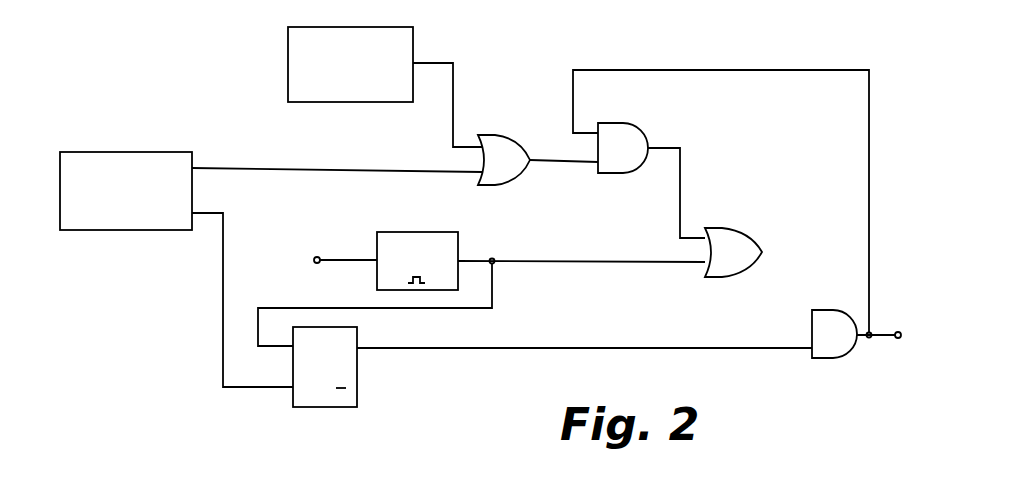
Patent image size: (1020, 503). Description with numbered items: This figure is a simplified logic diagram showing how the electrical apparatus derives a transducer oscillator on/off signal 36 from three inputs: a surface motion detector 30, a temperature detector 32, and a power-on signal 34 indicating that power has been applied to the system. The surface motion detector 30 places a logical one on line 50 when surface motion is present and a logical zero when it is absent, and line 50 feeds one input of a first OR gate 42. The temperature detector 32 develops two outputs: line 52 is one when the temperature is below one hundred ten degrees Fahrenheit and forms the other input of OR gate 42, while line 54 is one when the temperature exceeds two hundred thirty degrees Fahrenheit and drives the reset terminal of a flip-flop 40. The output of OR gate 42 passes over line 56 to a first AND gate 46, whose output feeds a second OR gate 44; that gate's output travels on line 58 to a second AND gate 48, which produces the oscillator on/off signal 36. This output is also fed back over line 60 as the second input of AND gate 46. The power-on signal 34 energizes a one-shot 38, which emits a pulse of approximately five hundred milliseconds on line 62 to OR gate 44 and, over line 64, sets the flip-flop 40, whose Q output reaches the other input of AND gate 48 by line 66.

The surface motion detector 30 is at (398, 27).
The temperature detector 32 is at (110, 152).
The power-on signal 34 is at (343, 263).
The transducer oscillator on/off signal 36 is at (885, 338).
The one-shot 38 is at (440, 214).
The flip-flop 40 is at (318, 407).
The OR gate 42 is at (500, 138).
The OR gate 44 is at (735, 230).
The AND gate 46 is at (622, 123).
The AND gate 48 is at (840, 360).
The line 50 is at (443, 63).
The line 52 is at (222, 172).
The line 54 is at (223, 232).
The line 56 is at (553, 164).
The line 58 is at (680, 180).
The line 60 is at (872, 96).
The line 62 is at (494, 240).
The line 64 is at (495, 292).
The line 66 is at (470, 350).